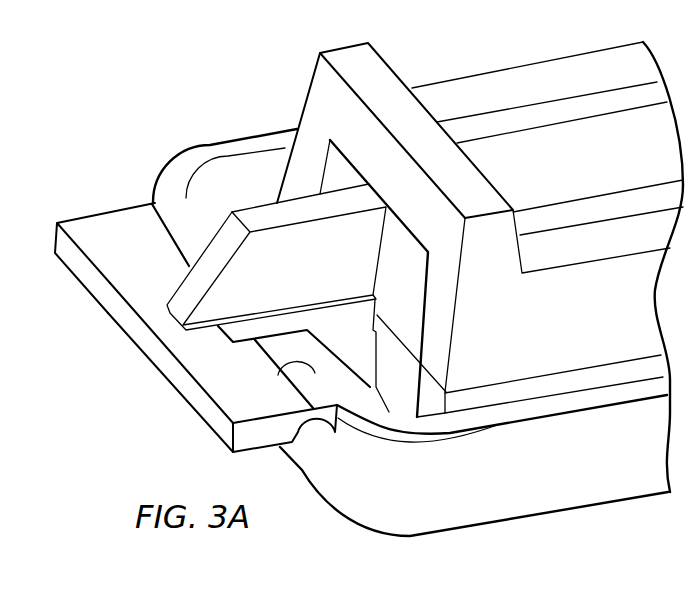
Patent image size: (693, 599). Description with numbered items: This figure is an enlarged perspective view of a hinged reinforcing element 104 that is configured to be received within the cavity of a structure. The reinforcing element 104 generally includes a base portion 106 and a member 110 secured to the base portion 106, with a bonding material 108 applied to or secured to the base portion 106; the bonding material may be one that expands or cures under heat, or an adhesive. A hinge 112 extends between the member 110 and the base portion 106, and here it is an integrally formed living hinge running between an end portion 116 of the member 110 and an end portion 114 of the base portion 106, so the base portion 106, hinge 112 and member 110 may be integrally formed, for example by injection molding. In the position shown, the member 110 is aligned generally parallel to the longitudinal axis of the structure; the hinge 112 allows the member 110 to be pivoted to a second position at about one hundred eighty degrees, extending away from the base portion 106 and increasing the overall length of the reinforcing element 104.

The reinforcing element 104 is at (141, 105).
The base portion 106 is at (275, 280).
The bonding material 108 is at (378, 78).
The member 110 is at (477, 488).
The hinge 112 is at (173, 247).
The end portion 114 is at (107, 230).
The end portion 116 is at (297, 362).